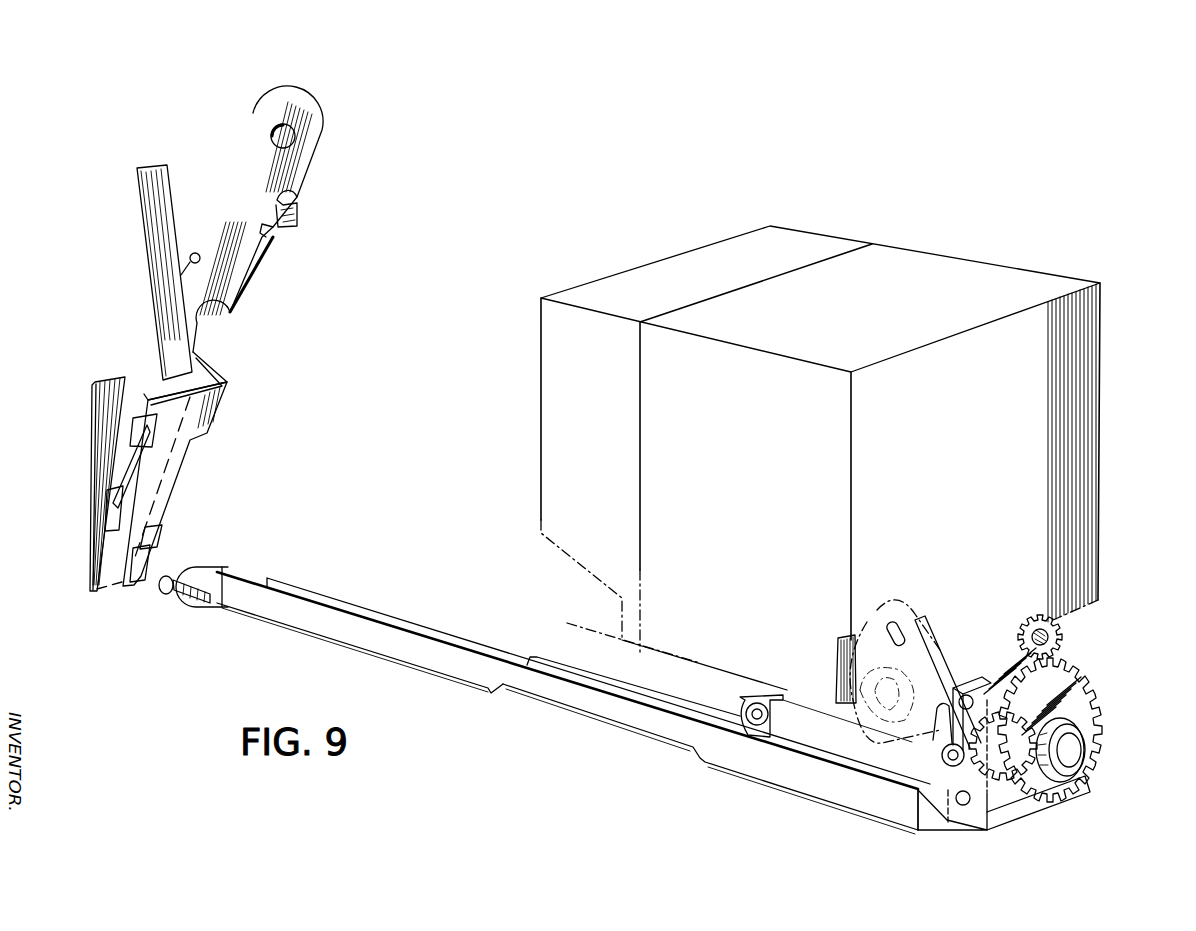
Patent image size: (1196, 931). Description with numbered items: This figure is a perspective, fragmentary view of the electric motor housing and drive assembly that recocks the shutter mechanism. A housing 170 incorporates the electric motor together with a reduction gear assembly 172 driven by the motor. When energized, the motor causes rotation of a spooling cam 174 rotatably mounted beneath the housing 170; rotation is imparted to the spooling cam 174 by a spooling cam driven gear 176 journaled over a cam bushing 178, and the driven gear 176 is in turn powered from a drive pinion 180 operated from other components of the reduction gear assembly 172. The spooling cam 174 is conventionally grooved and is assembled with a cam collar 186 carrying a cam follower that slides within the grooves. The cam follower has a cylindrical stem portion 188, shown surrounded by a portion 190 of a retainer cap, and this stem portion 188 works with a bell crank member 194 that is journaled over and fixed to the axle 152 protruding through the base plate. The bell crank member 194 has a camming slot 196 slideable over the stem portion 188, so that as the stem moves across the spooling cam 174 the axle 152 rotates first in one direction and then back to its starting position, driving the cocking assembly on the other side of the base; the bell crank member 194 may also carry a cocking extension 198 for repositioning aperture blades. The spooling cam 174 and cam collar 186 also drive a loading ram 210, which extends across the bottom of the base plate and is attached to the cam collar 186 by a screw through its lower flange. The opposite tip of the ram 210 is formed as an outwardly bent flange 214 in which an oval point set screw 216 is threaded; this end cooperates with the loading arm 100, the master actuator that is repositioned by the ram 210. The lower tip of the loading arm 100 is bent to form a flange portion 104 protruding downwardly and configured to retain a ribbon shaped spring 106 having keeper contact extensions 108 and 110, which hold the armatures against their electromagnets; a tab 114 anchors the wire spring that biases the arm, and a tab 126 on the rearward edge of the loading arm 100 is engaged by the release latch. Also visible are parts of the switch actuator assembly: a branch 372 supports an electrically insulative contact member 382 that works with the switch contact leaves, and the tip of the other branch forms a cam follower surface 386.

The loading arm 100 is at (259, 298).
The flange portion 104 is at (202, 440).
The ribbon shaped spring 106 is at (180, 392).
The keeper contact extension 108 is at (153, 220).
The keeper contact extension 110 is at (92, 440).
The tab 114 is at (297, 212).
The tab 126 is at (195, 253).
The axle 152 is at (893, 626).
The housing 170 is at (1085, 315).
The reduction gear assembly 172 is at (1062, 653).
The spooling cam 174 is at (847, 731).
The spooling cam driven gear 176 is at (1072, 722).
The cam bushing 178 is at (1088, 752).
The drive pinion 180 is at (983, 790).
The cam collar 186 is at (1003, 803).
The cylindrical stem portion 188 is at (918, 790).
The portion of retainer cap 190 is at (942, 756).
The bell crank member 194 is at (797, 733).
The camming slot 196 is at (908, 645).
The cocking extension 198 is at (750, 698).
The loading ram 210 is at (350, 637).
The outwardly bent flange 214 is at (188, 572).
The oval point set screw 216 is at (196, 602).
The branch 372 is at (840, 660).
The contact member 382 is at (980, 687).
The cam follower surface 386 is at (947, 667).